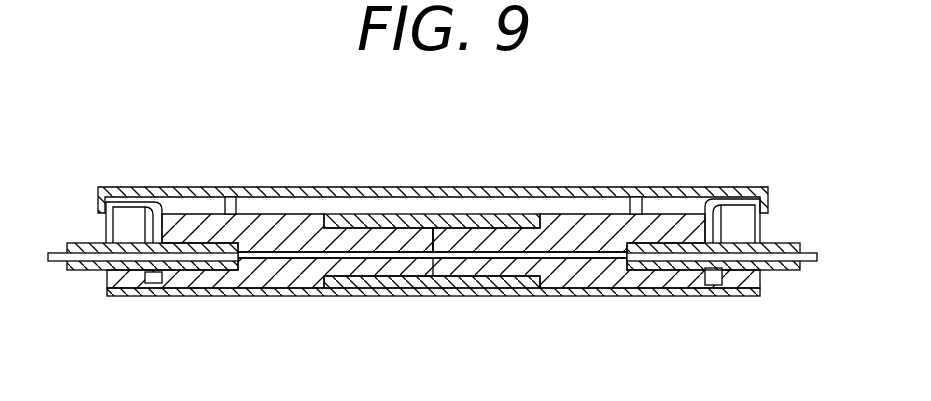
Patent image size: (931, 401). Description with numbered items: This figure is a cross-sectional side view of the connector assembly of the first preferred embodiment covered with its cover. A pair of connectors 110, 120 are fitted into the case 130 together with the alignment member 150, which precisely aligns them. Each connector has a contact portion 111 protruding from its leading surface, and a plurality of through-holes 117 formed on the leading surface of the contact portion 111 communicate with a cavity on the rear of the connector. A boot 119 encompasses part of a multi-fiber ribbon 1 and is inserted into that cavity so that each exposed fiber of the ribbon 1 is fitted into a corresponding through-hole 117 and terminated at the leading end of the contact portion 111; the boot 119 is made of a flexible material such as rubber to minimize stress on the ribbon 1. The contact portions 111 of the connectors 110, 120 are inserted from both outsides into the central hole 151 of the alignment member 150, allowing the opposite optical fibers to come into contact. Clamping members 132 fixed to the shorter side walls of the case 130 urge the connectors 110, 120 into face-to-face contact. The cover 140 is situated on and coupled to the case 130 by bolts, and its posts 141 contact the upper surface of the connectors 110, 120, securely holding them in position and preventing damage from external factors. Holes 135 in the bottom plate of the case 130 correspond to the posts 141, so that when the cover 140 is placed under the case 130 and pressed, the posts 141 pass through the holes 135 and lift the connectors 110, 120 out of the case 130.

The optical-fiber ribbon 1 is at (62, 243).
The connector 110 is at (305, 218).
The contact portion 111 is at (423, 280).
The through-hole 117 is at (527, 248).
The boot 119 is at (202, 245).
The connector 120 is at (570, 222).
The case 130 is at (303, 296).
The clamping member 132 is at (166, 203).
The hole 135 is at (647, 294).
The cover 140 is at (276, 181).
The post 141 is at (235, 205).
The alignment member 150 is at (451, 212).
The central hole 151 is at (346, 226).